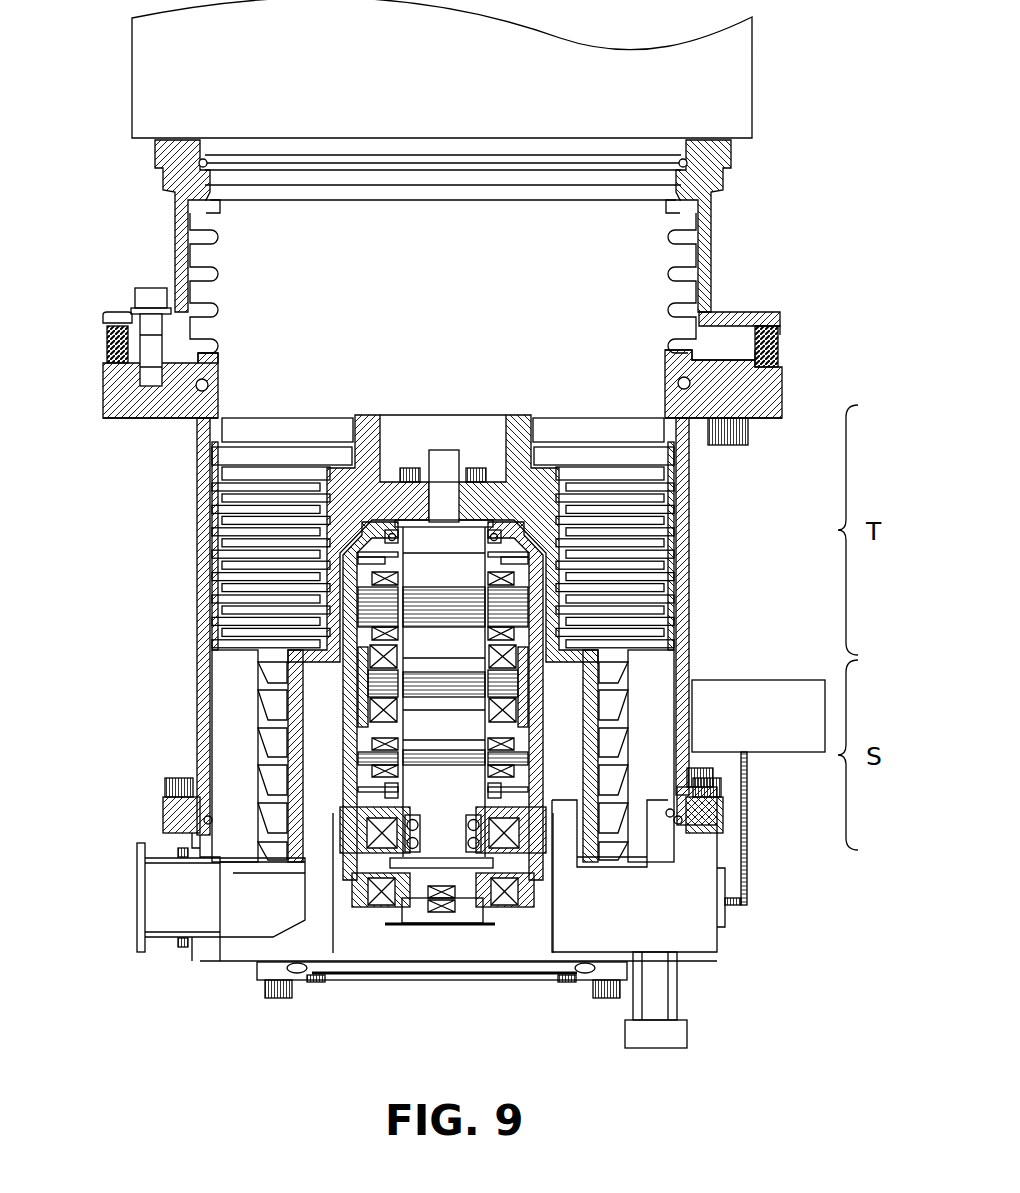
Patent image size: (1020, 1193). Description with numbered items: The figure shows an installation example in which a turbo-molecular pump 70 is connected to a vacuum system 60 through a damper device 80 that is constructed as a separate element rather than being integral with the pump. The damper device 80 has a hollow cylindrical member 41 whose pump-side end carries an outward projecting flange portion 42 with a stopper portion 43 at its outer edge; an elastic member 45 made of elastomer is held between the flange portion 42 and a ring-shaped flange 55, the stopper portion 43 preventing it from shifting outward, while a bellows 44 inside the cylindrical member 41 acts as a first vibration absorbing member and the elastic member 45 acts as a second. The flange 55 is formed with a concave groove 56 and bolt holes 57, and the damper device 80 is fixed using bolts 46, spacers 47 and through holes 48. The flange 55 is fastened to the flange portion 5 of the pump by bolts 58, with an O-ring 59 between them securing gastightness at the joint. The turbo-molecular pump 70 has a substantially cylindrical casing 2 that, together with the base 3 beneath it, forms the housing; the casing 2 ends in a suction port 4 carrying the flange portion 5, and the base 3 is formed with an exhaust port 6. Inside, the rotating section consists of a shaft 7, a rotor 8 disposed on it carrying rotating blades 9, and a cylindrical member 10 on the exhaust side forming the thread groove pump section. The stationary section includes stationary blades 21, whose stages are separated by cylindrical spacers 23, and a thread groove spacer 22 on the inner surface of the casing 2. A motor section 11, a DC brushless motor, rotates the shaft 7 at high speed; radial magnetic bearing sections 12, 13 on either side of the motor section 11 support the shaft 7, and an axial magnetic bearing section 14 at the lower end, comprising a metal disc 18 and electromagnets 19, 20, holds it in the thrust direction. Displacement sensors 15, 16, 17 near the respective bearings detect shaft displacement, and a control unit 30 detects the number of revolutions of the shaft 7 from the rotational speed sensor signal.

The vacuum system 60 is at (752, 90).
The damper device 80 is at (100, 217).
The turbo-molecular pump 70 is at (95, 540).
The cylindrical member 41 is at (712, 224).
The bellows 44 is at (712, 280).
The flange portion 42 is at (750, 313).
The stopper portion 43 is at (782, 320).
The elastic member 45 is at (780, 350).
The flange 55 is at (666, 371).
The concave groove 56 is at (783, 388).
The bolt hole 57 is at (107, 375).
The O-ring 59 is at (220, 384).
The through hole 48 is at (112, 317).
The spacer 47 is at (130, 322).
The bolt 46 is at (148, 287).
The casing 2 is at (690, 556).
The flange portion 5 is at (766, 416).
The bolt 58 is at (728, 447).
The rotating blades 9 is at (313, 418).
The spacer 23 is at (210, 480).
The stationary blades 21 is at (233, 454).
The rotor 8 is at (390, 478).
The suction port 4 is at (437, 390).
The shaft 7 is at (446, 452).
The cylindrical member 10 is at (290, 740).
The thread groove spacer 22 is at (222, 672).
The magnetic bearing section 14 is at (360, 924).
The displacement sensor 15 is at (350, 562).
The magnetic bearing section 12 is at (350, 606).
The motor section 11 is at (350, 690).
The magnetic bearing section 13 is at (350, 750).
The displacement sensor 16 is at (350, 792).
The electromagnet 19 is at (520, 860).
The metal disc 18 is at (460, 870).
The displacement sensor 17 is at (440, 915).
The electromagnet 20 is at (510, 906).
The base 3 is at (718, 945).
The exhaust port 6 is at (135, 901).
The control unit 30 is at (772, 753).